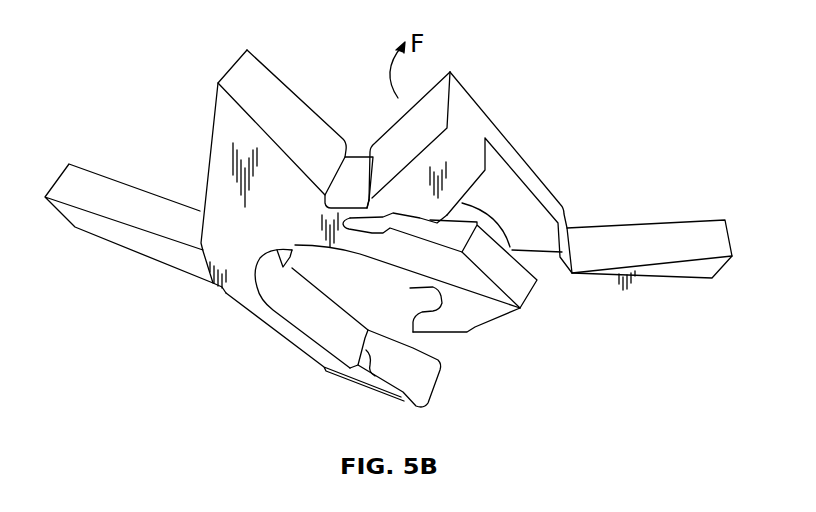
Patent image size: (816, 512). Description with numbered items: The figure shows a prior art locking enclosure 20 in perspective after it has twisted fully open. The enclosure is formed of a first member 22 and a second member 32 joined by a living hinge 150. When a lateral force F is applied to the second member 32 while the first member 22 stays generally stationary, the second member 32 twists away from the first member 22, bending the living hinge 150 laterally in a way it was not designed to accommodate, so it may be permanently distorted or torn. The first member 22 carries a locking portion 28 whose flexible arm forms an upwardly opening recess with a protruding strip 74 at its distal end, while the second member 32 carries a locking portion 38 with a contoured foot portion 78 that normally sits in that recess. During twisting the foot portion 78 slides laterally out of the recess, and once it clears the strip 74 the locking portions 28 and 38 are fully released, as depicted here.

The prior art locking enclosure 20 is at (155, 85).
The living hinge 150 is at (357, 168).
The first member 22 is at (277, 328).
The protruding strip 74 is at (371, 372).
The locking portion 28 is at (385, 382).
The foot portion 78 is at (413, 287).
The locking portion 38 is at (496, 315).
The second member 32 is at (547, 292).